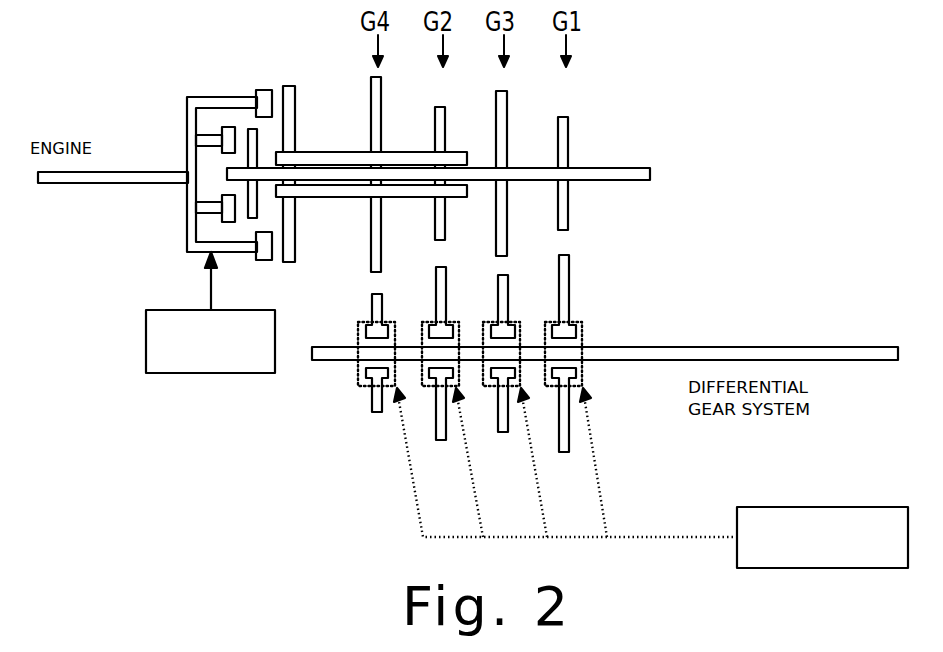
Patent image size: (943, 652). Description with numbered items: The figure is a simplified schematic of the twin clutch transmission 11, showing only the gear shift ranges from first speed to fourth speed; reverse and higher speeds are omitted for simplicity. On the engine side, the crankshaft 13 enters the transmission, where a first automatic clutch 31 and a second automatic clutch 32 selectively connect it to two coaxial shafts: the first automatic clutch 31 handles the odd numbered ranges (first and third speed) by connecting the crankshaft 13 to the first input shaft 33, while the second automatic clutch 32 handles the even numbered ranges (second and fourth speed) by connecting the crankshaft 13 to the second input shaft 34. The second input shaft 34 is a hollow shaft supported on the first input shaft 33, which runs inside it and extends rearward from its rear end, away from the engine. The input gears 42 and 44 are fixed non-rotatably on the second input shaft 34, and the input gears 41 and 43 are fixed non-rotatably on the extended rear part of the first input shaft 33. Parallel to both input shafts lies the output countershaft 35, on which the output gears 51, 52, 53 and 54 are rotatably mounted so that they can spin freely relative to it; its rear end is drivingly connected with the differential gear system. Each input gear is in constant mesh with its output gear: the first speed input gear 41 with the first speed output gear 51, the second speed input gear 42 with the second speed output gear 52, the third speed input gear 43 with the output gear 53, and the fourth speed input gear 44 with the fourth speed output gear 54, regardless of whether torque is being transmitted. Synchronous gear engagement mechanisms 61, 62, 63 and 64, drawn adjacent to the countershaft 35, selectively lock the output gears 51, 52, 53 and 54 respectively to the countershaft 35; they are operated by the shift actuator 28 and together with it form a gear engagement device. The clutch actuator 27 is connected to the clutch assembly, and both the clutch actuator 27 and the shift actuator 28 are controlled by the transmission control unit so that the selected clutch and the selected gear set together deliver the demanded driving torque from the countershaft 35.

The twin clutch transmission 11 is at (797, 138).
The crankshaft 13 is at (132, 183).
The clutch actuator 27 is at (147, 322).
The shift actuator 28 is at (840, 507).
The first automatic clutch 31 is at (213, 130).
The second automatic clutch 32 is at (252, 92).
The first input shaft 33 is at (648, 170).
The second input shaft 34 is at (338, 197).
The output countershaft 35 is at (715, 347).
The first speed input gear 41 is at (568, 145).
The second speed input gear 42 is at (445, 128).
The third speed input gear 43 is at (507, 128).
The fourth speed input gear 44 is at (372, 120).
The first speed output gear 51 is at (563, 452).
The second speed output gear 52 is at (440, 440).
The third speed output gear 53 is at (501, 432).
The fourth speed output gear 54 is at (376, 412).
The synchronous gear engagement mechanism 61 is at (581, 337).
The synchronous gear engagement mechanism 62 is at (458, 320).
The synchronous gear engagement mechanism 63 is at (520, 320).
The synchronous gear engagement mechanism 64 is at (395, 320).